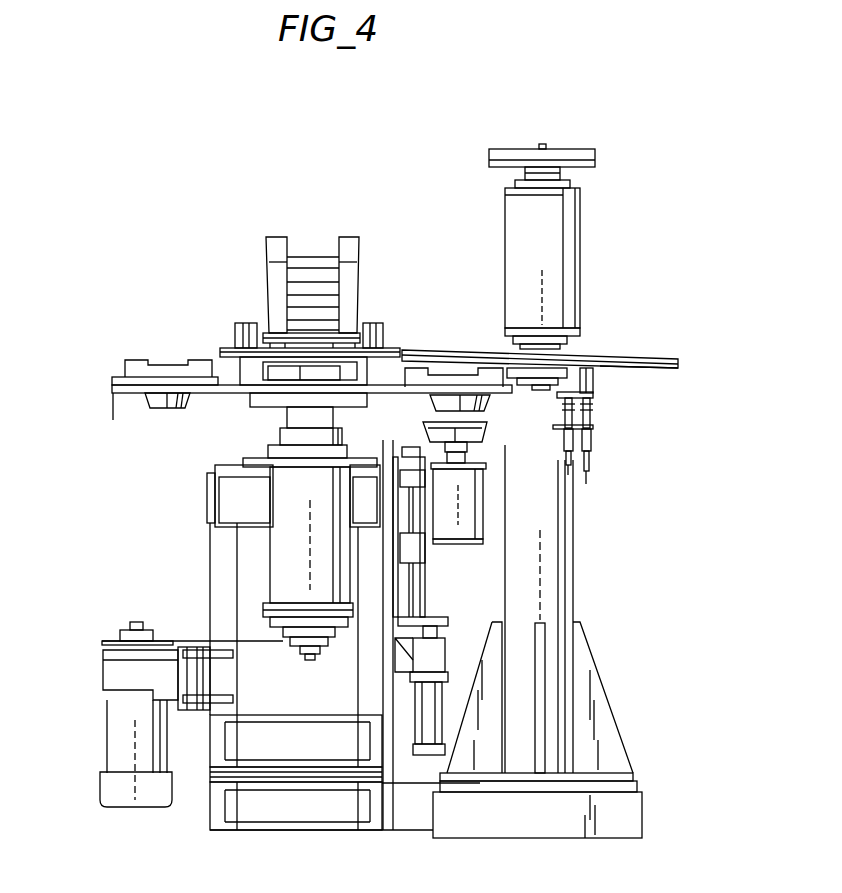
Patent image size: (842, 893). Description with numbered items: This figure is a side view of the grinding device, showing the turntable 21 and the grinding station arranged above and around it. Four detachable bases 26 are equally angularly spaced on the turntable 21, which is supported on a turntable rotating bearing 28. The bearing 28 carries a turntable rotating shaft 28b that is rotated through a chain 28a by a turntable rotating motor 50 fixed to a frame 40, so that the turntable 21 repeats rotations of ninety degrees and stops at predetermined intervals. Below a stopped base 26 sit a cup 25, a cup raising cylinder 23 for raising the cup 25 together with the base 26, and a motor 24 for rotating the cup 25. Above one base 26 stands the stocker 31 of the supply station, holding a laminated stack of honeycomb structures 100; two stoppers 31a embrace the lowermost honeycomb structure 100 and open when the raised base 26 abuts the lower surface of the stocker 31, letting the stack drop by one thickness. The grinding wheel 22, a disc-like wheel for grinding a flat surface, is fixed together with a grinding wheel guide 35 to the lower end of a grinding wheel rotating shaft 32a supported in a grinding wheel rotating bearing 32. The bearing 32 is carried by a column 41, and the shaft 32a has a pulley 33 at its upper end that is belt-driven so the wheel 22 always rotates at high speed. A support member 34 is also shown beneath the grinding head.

The turntable 21 is at (112, 387).
The grinding wheel 22 is at (666, 369).
The cup raising cylinder 23 is at (430, 735).
The motor 24 is at (484, 512).
The cup 25 is at (482, 436).
The base 26 is at (123, 363).
The turntable rotating bearing 28 is at (270, 562).
The chain 28a is at (255, 643).
The turntable rotating shaft 28b is at (310, 662).
The stocker 31 is at (273, 280).
The stopper 31a is at (263, 323).
The grinding wheel rotating bearing 32 is at (580, 248).
The grinding wheel rotating shaft 32a is at (592, 417).
The pulley 33 is at (598, 162).
The support post 34 is at (593, 378).
The grinding wheel guide 35 is at (643, 358).
The frame 40 is at (207, 495).
The column 41 is at (560, 595).
The turntable rotating motor 50 is at (108, 746).
The honeycomb structure 100 is at (318, 257).